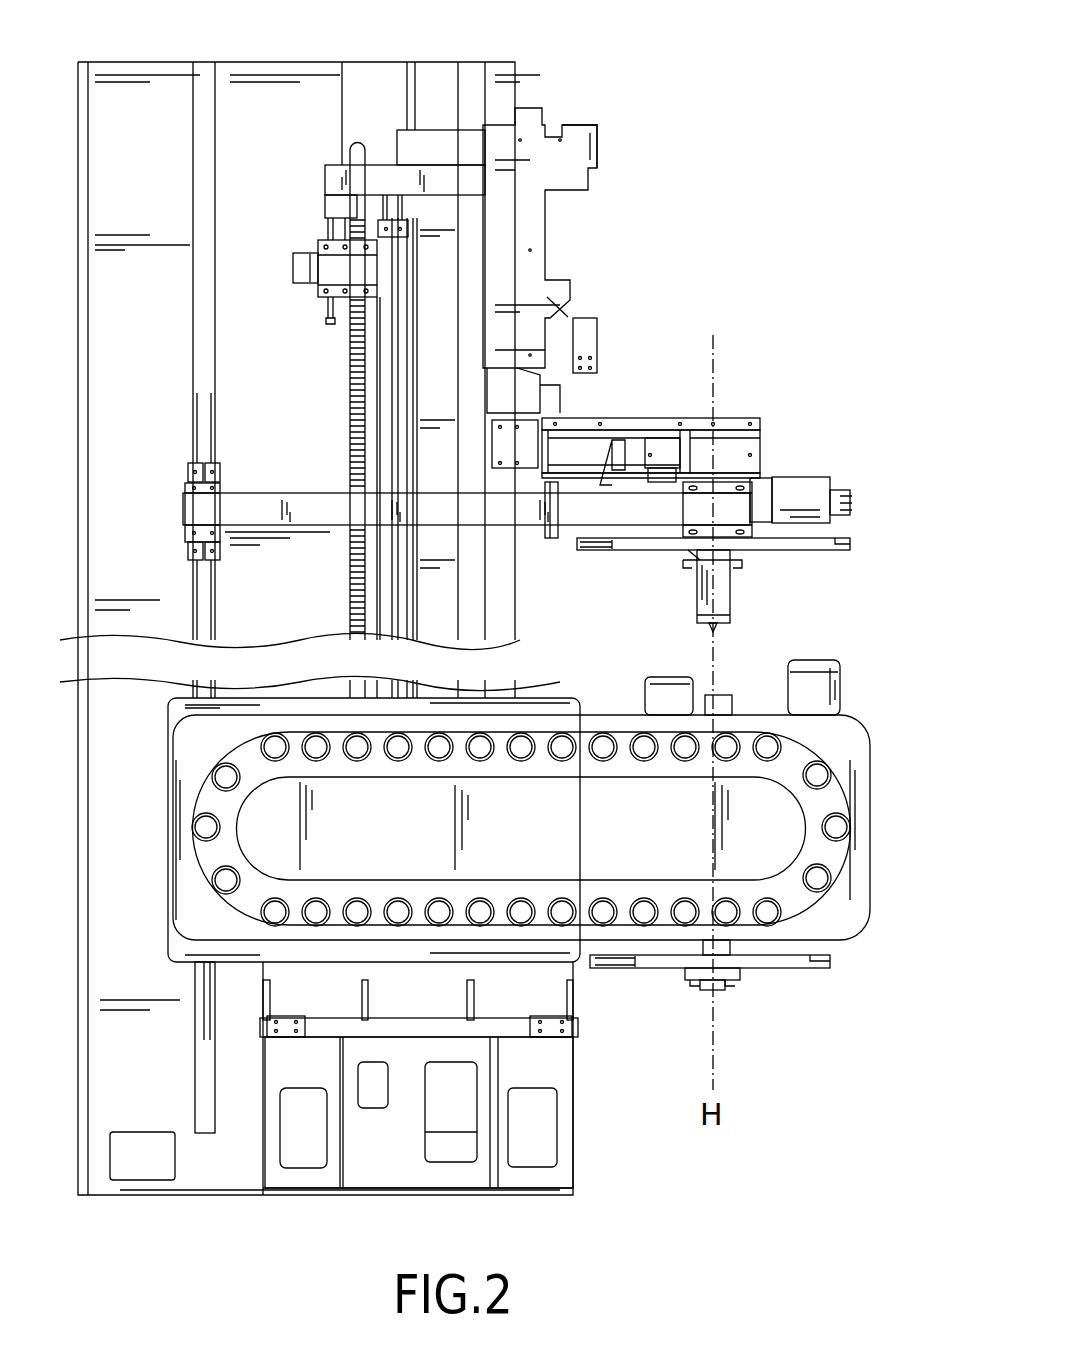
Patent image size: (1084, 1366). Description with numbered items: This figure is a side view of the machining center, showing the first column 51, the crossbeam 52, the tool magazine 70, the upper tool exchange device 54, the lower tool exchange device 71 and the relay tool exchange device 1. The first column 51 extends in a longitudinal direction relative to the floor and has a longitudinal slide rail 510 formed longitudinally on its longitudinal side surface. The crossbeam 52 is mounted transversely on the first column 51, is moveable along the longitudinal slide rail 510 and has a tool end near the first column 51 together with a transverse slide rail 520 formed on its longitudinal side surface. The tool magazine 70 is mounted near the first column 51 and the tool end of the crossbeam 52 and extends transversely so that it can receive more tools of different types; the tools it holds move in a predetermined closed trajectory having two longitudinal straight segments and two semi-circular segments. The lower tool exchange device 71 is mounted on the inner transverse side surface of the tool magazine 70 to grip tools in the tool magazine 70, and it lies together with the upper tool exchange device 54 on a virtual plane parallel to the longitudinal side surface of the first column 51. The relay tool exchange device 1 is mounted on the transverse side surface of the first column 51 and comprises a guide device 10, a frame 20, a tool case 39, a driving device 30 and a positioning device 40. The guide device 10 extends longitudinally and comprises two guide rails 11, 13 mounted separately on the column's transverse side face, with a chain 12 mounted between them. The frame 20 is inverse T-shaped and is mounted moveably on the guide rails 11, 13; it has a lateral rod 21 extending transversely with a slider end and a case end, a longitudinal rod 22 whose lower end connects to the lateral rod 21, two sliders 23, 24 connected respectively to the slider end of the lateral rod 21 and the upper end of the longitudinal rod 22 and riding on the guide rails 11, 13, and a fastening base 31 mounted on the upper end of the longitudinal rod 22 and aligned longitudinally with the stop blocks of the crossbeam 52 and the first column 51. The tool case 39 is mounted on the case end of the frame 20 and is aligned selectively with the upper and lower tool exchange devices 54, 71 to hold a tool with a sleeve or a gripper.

The relay tool exchange device 1 is at (172, 398).
The guide device 10 is at (190, 630).
The guide rail 11 is at (205, 567).
The chain 12 is at (355, 565).
The guide rail 13 is at (393, 600).
The frame 20 is at (170, 510).
The lateral rod 21 is at (300, 505).
The longitudinal rod 22 is at (390, 355).
The slider 23 is at (190, 474).
The slider 24 is at (400, 232).
The driving device 30 is at (305, 235).
The fastening base 31 is at (332, 272).
The tool case 39 is at (700, 552).
The positioning device 40 is at (638, 436).
The first column 51 is at (160, 56).
The longitudinal slide rail 510 is at (505, 72).
The crossbeam 52 is at (558, 115).
The transverse slide rail 520 is at (610, 150).
The upper tool exchange device 54 is at (750, 596).
The tool magazine 70 is at (882, 775).
The lower tool exchange device 71 is at (775, 985).